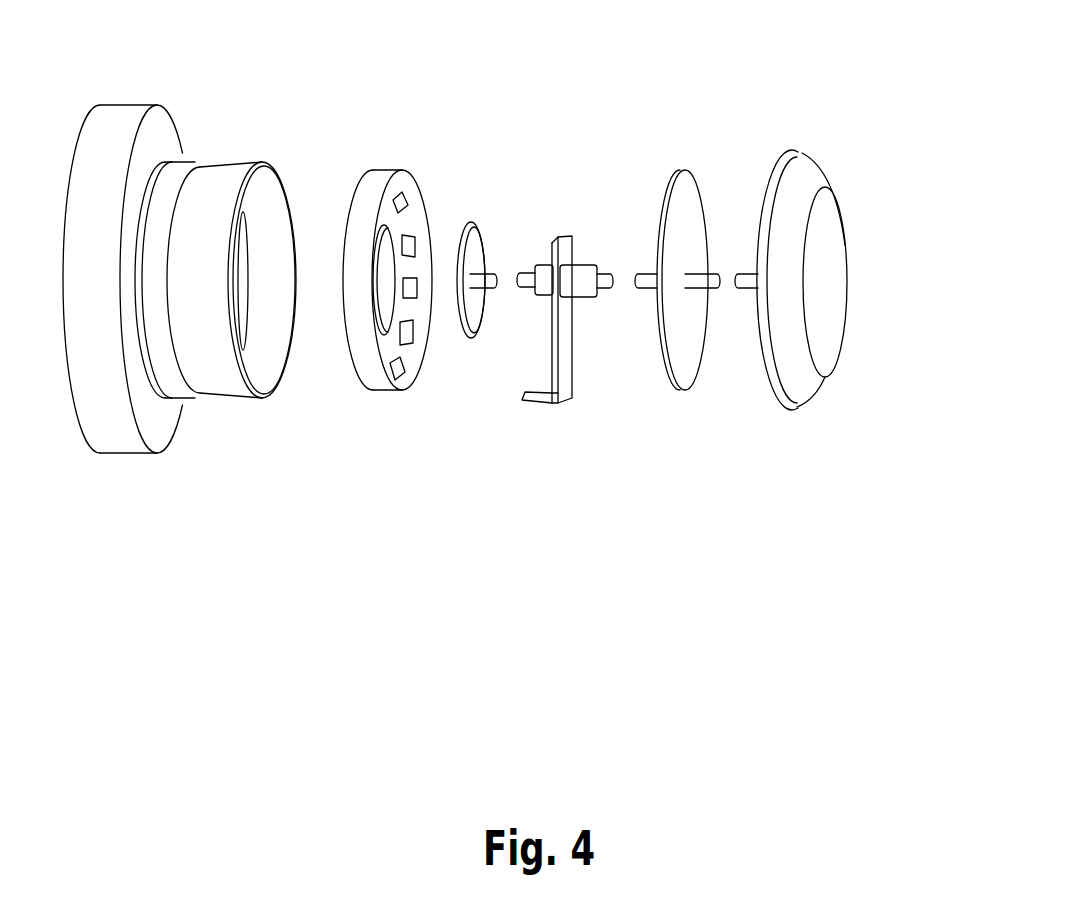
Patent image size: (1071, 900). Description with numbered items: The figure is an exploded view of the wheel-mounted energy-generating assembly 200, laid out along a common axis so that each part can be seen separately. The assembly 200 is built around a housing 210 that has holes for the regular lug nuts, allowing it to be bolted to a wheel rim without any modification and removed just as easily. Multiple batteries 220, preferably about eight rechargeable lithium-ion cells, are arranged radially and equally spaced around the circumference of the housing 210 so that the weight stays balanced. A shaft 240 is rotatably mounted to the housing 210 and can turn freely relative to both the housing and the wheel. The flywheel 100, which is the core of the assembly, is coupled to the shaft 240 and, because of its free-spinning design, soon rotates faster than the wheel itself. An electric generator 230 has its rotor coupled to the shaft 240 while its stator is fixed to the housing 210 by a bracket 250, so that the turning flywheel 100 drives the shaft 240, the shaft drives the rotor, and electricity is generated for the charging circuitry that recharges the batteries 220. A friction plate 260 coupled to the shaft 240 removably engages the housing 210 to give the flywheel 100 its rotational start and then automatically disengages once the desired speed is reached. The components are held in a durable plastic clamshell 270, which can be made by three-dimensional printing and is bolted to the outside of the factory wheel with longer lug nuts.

The flywheel 100 is at (682, 402).
The assembly 200 is at (486, 261).
The housing 210 is at (626, 247).
The batteries 220 is at (408, 357).
The electric generator 230 is at (541, 245).
The shaft 240 is at (606, 250).
The bracket 250 is at (560, 420).
The friction plate 260 is at (467, 350).
The clamshell 270 is at (828, 218).